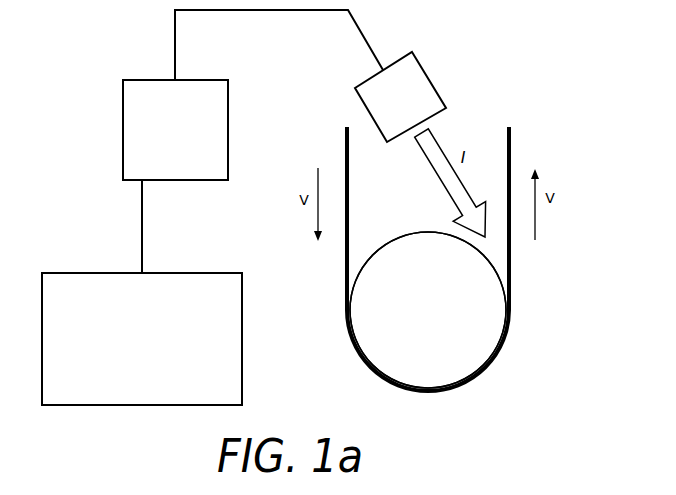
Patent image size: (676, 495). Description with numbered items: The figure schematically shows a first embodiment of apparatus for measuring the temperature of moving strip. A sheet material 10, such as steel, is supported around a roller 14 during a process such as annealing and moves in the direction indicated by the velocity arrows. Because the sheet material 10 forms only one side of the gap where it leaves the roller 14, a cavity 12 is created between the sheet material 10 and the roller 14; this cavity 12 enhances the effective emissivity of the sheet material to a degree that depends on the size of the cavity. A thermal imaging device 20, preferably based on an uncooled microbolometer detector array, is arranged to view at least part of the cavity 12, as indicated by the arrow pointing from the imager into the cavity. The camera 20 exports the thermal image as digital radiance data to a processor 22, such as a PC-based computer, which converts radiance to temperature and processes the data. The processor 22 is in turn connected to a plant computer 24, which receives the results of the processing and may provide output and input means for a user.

The sheet material 10 is at (510, 141).
The cavity 12 is at (497, 258).
The roller 14 is at (428, 310).
The thermal imaging device 20 is at (400, 97).
The processor 22 is at (175, 130).
The plant computer 24 is at (142, 339).